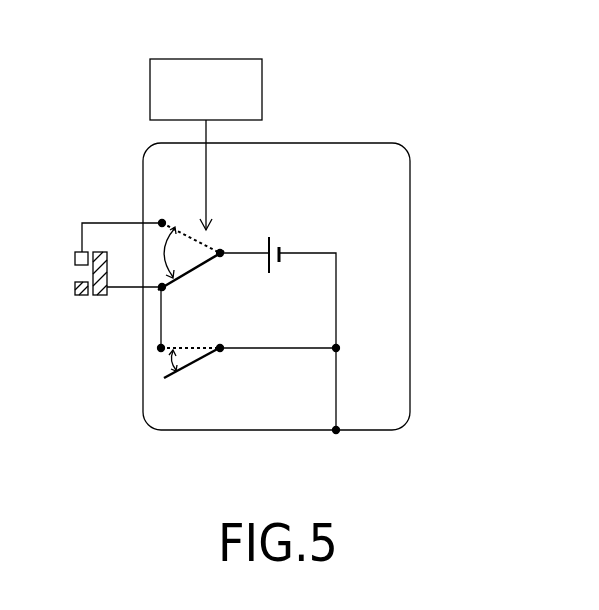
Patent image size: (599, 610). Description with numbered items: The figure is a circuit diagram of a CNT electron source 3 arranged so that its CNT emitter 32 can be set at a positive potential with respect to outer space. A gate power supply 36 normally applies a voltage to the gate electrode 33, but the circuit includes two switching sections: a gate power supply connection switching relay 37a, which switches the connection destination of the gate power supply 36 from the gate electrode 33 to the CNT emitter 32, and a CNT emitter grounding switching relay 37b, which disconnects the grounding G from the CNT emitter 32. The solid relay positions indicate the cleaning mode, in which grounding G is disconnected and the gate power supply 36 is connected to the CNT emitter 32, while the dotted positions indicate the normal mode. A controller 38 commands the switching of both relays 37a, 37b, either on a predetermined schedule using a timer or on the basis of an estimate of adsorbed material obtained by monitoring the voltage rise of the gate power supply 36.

The CNT electron source 3 is at (276, 244).
The grounding G is at (240, 430).
The CNT emitter 32 is at (100, 297).
The gate electrode 33 is at (80, 300).
The gate power supply 36 is at (279, 236).
The gate power supply connection switching relay 37a is at (193, 276).
The CNT emitter grounding switching relay 37b is at (222, 343).
The controller 38 is at (150, 83).